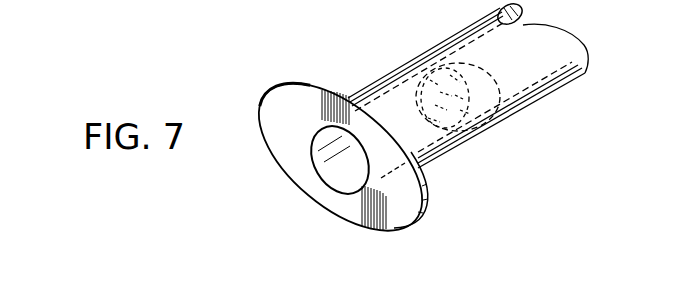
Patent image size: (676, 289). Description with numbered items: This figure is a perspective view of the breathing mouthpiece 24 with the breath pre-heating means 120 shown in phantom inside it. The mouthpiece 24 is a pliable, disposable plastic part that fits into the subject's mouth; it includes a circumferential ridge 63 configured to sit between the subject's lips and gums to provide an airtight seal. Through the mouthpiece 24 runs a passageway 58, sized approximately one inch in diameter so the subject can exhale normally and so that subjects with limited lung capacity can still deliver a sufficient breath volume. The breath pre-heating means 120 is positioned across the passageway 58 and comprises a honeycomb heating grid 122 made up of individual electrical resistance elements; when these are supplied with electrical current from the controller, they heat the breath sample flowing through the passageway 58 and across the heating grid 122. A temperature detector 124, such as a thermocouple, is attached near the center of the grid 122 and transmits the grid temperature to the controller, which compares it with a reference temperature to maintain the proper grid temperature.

The mouthpiece 24 is at (272, 161).
The passageway 58 is at (395, 68).
The circumferential ridge 63 is at (420, 218).
The breath pre-heating means 120 is at (517, 108).
The honeycomb heating grid 122 is at (503, 125).
The temperature detector 124 is at (477, 135).